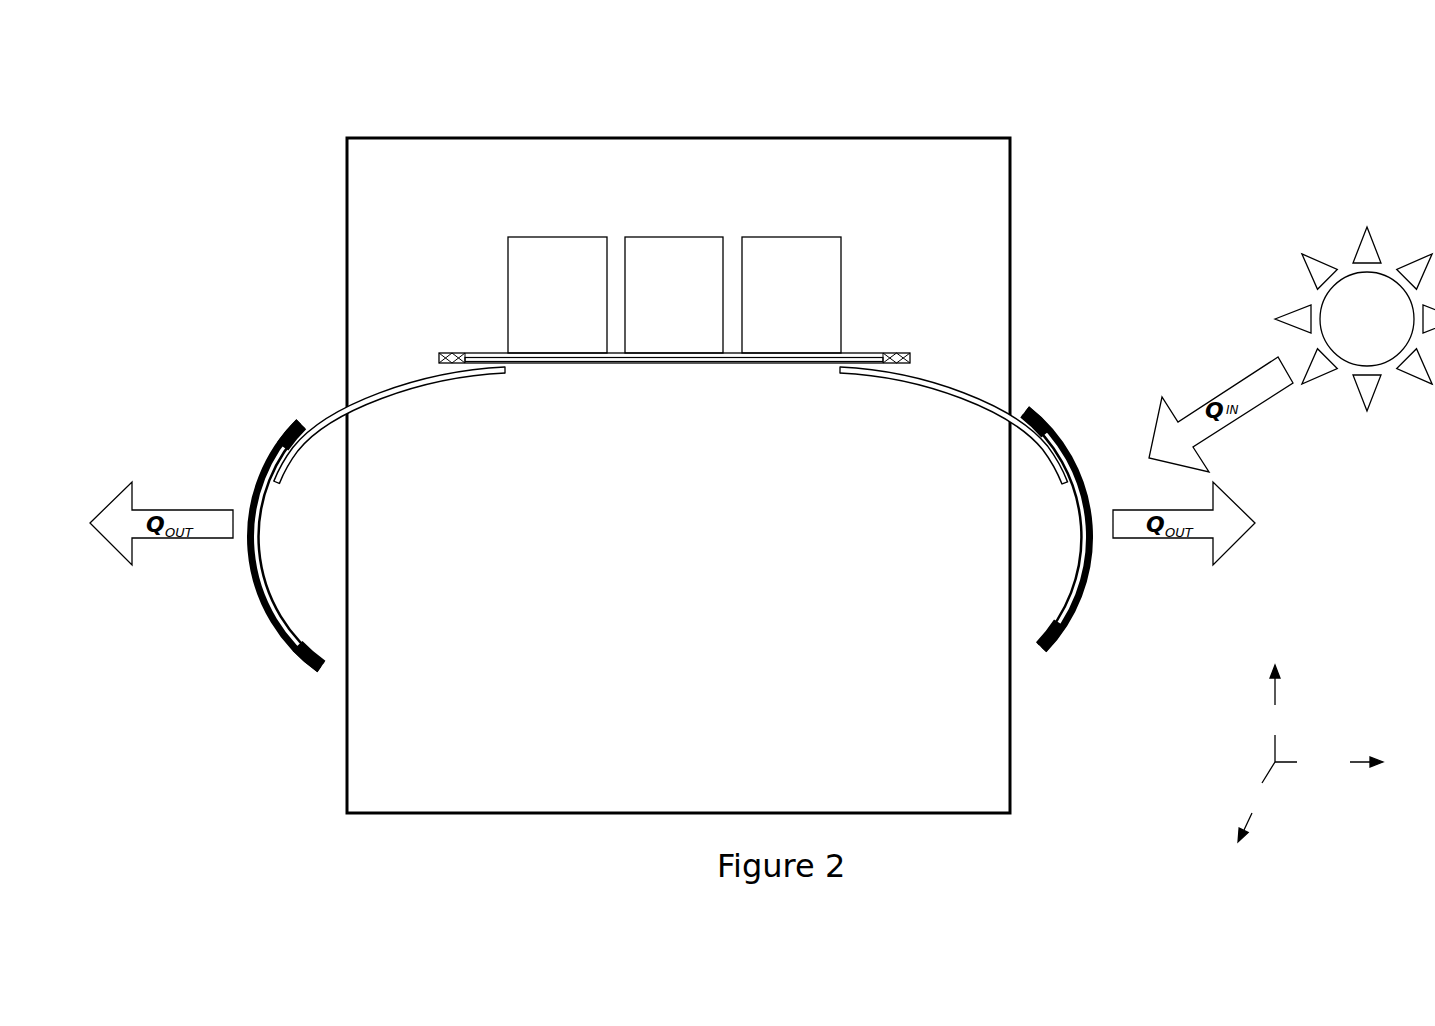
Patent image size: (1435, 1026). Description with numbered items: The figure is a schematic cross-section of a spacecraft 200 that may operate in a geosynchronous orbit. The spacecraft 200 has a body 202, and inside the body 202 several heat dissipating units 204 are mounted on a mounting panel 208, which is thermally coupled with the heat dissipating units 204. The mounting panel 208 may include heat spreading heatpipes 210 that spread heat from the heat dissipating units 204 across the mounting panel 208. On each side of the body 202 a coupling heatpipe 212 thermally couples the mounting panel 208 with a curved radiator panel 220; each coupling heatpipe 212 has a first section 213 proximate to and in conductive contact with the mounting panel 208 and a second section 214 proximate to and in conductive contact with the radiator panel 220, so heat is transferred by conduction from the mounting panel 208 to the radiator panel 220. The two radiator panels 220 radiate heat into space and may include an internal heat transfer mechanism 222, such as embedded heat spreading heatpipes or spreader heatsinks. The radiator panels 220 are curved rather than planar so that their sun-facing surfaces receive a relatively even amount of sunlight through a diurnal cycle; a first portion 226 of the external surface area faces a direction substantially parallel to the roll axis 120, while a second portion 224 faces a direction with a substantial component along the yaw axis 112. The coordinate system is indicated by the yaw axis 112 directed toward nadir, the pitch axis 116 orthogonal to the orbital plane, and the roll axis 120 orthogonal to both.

The spacecraft 200 is at (205, 88).
The body 202 is at (973, 137).
The heat dissipating units 204 is at (557, 237).
The mounting panel 208 is at (886, 353).
The heat spreading heatpipes 210 is at (497, 360).
The coupling heatpipes 212 is at (372, 390).
The first section 213 is at (862, 380).
The second section 214 is at (1055, 481).
The radiator panels 220 is at (283, 437).
The internal heat transfer mechanism 222 is at (1080, 600).
The second portion 224 is at (1058, 408).
The first portion 226 is at (1100, 520).
The yaw axis 112 is at (1278, 713).
The pitch axis 116 is at (1260, 802).
The roll axis 120 is at (1329, 763).